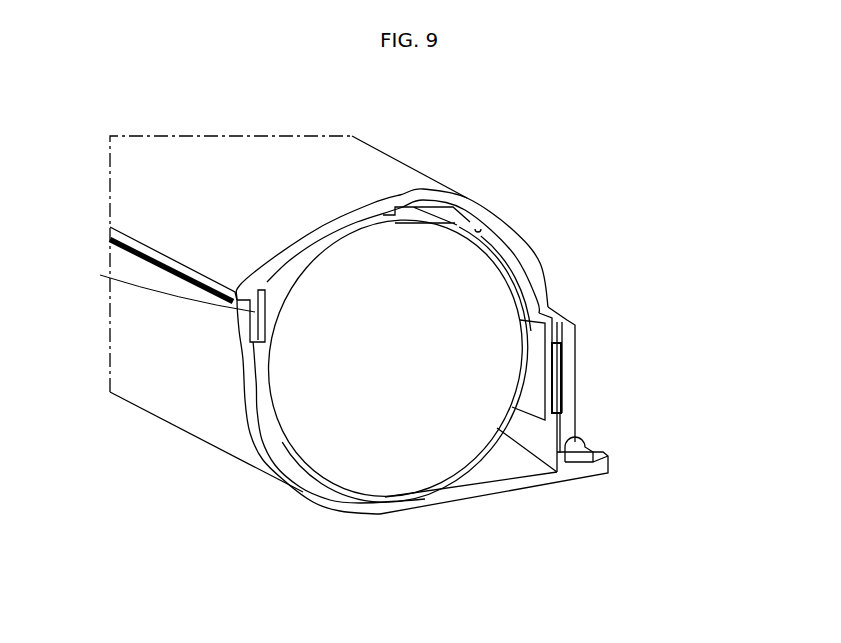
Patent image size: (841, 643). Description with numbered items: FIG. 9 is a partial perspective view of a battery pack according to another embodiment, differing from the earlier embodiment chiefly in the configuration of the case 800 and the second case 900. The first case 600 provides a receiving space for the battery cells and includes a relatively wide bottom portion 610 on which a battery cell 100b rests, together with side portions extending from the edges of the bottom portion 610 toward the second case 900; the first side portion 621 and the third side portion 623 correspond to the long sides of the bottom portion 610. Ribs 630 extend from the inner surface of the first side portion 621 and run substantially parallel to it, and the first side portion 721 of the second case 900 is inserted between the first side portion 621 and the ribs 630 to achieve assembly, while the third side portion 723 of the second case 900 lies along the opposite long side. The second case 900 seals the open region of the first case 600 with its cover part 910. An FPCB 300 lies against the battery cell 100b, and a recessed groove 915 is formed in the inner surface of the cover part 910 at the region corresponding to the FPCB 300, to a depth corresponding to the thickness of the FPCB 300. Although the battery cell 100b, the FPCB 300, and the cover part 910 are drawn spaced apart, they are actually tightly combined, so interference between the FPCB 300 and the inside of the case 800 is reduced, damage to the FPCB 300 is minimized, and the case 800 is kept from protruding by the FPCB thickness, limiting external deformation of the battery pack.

The battery cell 100b is at (395, 423).
The FPCB 300 is at (497, 247).
The first case 600 is at (379, 388).
The bottom portion 610 is at (523, 482).
The first side portion 621 is at (257, 425).
The third side portion 623 is at (568, 424).
The ribs 630 is at (250, 333).
The first side portion 721 is at (238, 302).
The third side portion 723 is at (570, 363).
The case 800 is at (414, 329).
The second case 900 is at (491, 210).
The cover part 910 is at (430, 192).
The recessed groove 915 is at (478, 226).